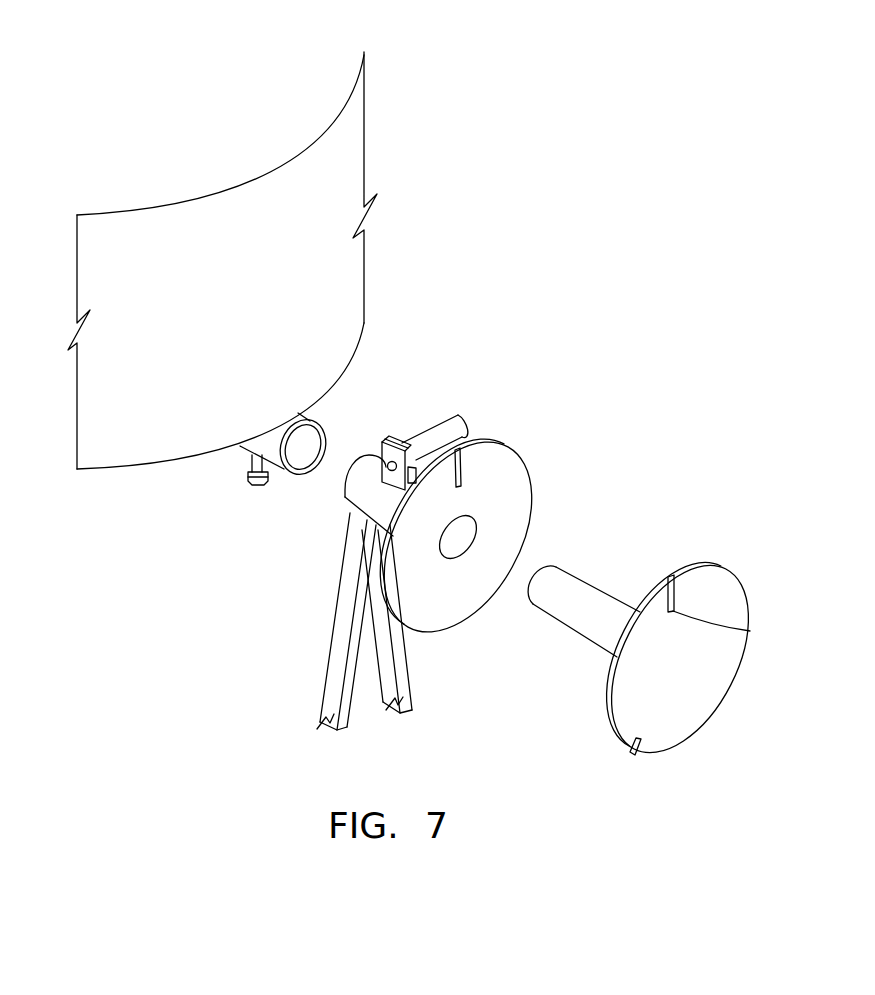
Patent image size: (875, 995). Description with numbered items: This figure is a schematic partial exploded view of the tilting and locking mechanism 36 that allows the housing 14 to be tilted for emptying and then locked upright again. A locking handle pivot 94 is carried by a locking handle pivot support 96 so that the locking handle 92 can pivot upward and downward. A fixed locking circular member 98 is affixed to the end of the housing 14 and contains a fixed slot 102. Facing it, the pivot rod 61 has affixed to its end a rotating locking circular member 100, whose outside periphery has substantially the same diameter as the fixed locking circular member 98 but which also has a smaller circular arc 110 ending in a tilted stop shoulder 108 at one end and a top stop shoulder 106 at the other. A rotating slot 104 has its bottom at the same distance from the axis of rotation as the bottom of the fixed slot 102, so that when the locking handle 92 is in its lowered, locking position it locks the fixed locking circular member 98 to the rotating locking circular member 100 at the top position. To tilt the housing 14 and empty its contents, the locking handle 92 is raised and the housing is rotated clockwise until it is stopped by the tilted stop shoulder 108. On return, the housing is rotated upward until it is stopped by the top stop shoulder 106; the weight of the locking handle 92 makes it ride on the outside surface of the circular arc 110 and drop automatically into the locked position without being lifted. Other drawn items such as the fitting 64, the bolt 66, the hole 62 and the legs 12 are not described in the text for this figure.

The housing 14 is at (226, 330).
The fitting 64 is at (307, 413).
The bolt 66 is at (255, 487).
The locking handle pivot 94 is at (346, 496).
The locking handle pivot support 96 is at (391, 435).
The locking handle 92 is at (455, 413).
The fixed locking circular member 98 is at (510, 443).
The fixed slot 102 is at (460, 476).
The hole 62 is at (455, 543).
The legs 12 is at (332, 675).
The tilting and locking mechanism 36 is at (683, 636).
The pivot rod 61 is at (572, 573).
The rotating locking circular member 100 is at (745, 593).
The top stop shoulder 106 is at (667, 575).
The rotating slot 104 is at (752, 632).
The circular arc 110 is at (617, 718).
The tilted stop shoulder 108 is at (643, 753).